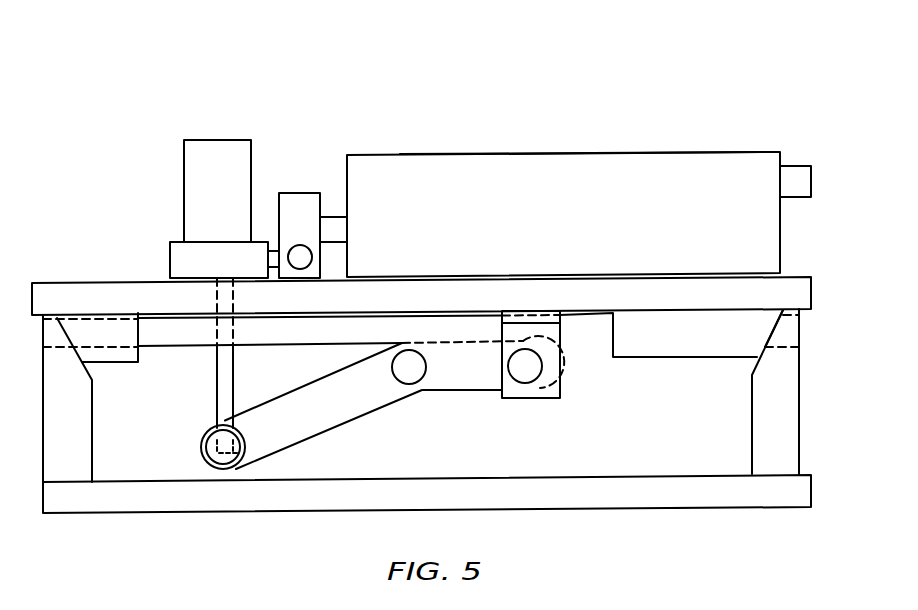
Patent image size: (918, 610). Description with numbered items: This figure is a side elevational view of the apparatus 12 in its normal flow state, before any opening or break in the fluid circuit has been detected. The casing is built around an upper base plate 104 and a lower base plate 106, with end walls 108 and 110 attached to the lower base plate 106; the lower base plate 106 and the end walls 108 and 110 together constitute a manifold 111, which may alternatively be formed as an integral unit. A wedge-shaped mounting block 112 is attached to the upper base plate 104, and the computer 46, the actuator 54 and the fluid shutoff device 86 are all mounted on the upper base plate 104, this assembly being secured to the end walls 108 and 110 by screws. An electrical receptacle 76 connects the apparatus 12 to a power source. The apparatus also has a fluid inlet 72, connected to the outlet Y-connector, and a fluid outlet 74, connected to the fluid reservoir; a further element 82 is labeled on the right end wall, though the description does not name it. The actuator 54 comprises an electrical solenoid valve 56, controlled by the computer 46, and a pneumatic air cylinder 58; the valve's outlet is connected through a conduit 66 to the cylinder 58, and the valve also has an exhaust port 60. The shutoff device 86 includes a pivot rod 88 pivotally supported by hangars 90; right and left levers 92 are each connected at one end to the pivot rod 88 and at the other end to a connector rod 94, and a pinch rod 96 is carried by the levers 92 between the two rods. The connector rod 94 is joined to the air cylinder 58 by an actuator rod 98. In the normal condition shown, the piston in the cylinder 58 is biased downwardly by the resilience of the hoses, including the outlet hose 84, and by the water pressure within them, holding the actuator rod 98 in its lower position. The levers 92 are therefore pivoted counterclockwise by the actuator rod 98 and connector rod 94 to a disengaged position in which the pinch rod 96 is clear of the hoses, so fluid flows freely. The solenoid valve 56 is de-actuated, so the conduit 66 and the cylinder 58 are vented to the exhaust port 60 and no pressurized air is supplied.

The apparatus 12 is at (453, 128).
The computer 46 is at (700, 152).
The actuator 54 is at (288, 80).
The electrical solenoid valve 56 is at (297, 193).
The pneumatic air cylinder 58 is at (216, 140).
The exhaust port 60 is at (300, 245).
The conduit 66 is at (273, 250).
The fluid inlet 72 is at (793, 325).
The fluid outlet 74 is at (52, 333).
The electrical receptacle 76 is at (795, 166).
The angled support 82 is at (757, 355).
The outlet hose 84 is at (590, 332).
The fluid shutoff device 86 is at (192, 432).
The pivot rod 88 is at (527, 377).
The hangars 90 is at (515, 400).
The pivotal links or levers 92 is at (348, 405).
The connector rod 94 is at (228, 460).
The pinch rod 96 is at (412, 378).
The actuator rod 98 is at (215, 365).
The upper base plate 104 is at (793, 277).
The lower base plate 106 is at (787, 497).
The end wall 108 is at (75, 457).
The end wall 110 is at (783, 413).
The manifold 111 is at (35, 490).
The wedge-shaped mounting block 112 is at (100, 350).